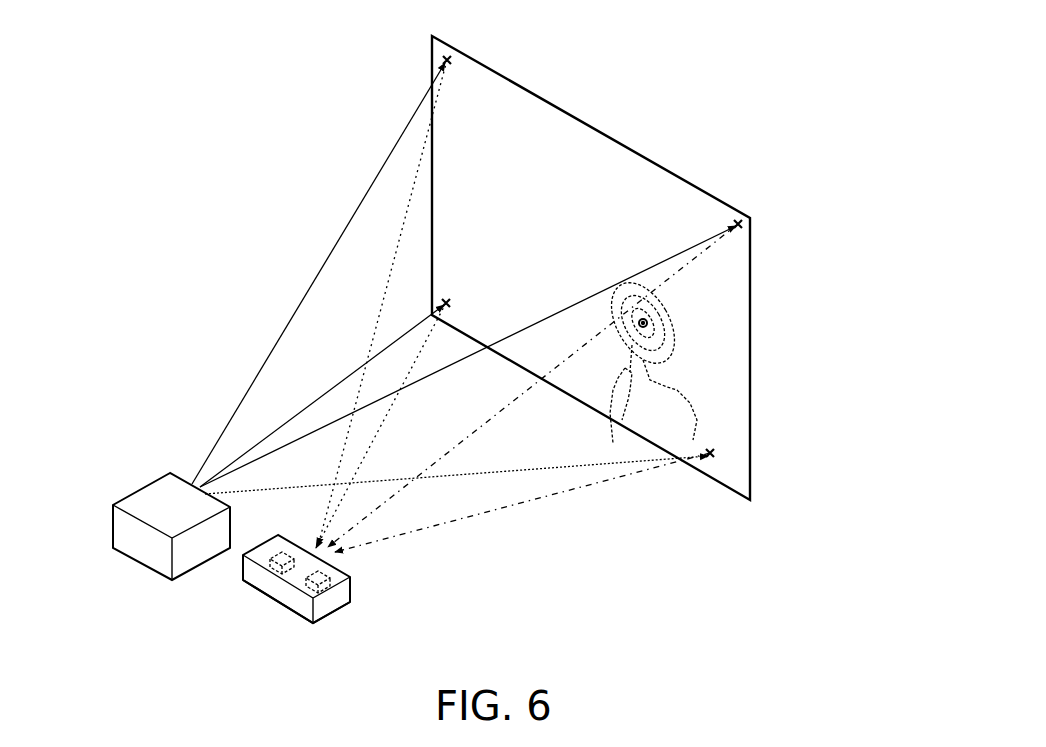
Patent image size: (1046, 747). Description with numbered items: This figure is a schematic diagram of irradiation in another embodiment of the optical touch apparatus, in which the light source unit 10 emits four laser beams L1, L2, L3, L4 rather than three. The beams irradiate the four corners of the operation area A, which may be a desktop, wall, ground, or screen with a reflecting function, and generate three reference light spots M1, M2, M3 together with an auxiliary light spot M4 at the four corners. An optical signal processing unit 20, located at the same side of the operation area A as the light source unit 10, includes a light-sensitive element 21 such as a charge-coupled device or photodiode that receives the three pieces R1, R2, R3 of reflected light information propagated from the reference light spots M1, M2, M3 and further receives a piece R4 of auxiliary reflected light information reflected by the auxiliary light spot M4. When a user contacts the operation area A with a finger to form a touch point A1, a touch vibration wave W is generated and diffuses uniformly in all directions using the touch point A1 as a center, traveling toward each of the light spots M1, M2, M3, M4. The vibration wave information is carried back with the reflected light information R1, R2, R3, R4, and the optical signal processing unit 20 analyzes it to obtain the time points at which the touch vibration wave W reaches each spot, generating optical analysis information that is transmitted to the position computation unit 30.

The light source unit 10 is at (133, 560).
The optical signal processing unit 20 is at (303, 598).
The light-sensitive element 21 is at (275, 572).
The position computation unit 30 is at (293, 617).
The operation area A is at (752, 363).
The touch point A1 is at (650, 323).
The touch vibration wave W is at (662, 305).
The reference light spot M1 is at (452, 51).
The reference light spot M2 is at (743, 215).
The reference light spot M3 is at (723, 452).
The auxiliary light spot M4 is at (447, 300).
The laser beam L1 is at (258, 370).
The laser beam L2 is at (285, 452).
The laser beam L3 is at (383, 480).
The laser beam L4 is at (350, 373).
The reflected light information R1 is at (370, 297).
The reflected light information R2 is at (490, 428).
The reflected light information R3 is at (522, 508).
The auxiliary reflected light information R4 is at (340, 514).